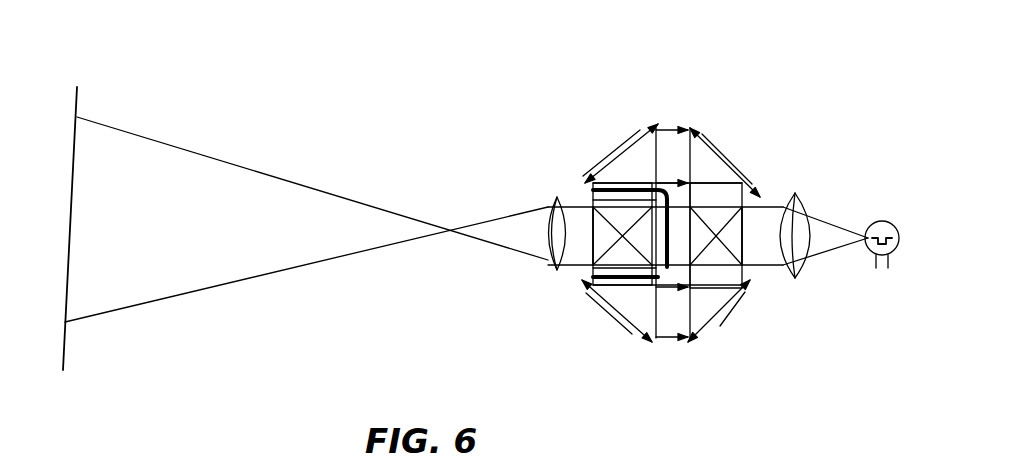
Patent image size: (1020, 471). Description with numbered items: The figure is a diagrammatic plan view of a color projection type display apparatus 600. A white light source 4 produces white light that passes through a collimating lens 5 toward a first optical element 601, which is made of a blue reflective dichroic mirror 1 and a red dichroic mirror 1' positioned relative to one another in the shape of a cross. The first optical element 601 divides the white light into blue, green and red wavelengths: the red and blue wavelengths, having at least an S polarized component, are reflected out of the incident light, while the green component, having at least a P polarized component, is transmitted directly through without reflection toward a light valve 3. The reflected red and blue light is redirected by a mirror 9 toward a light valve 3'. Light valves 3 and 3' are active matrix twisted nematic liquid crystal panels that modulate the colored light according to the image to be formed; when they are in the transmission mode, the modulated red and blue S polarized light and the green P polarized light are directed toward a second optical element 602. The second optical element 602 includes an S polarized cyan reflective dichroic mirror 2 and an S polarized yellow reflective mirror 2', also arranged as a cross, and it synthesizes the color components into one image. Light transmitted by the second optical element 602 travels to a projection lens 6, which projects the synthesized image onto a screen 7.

The projection type display apparatus 600 is at (525, 87).
The blue reflective dichroic mirror 1 is at (747, 197).
The red dichroic mirror 1' is at (751, 272).
The S polarized cyan reflective dichroic mirror 2 is at (572, 208).
The S polarized yellow reflective mirror 2' is at (577, 304).
The light valve 3 is at (653, 320).
The light valve 3' is at (667, 146).
The white light source 4 is at (885, 222).
The collimating lens 5 is at (805, 193).
The projection lens 6 is at (546, 233).
The screen 7 is at (67, 347).
The mirror 9 is at (613, 173).
The first optical element 601 is at (747, 248).
The second optical element 602 is at (583, 238).